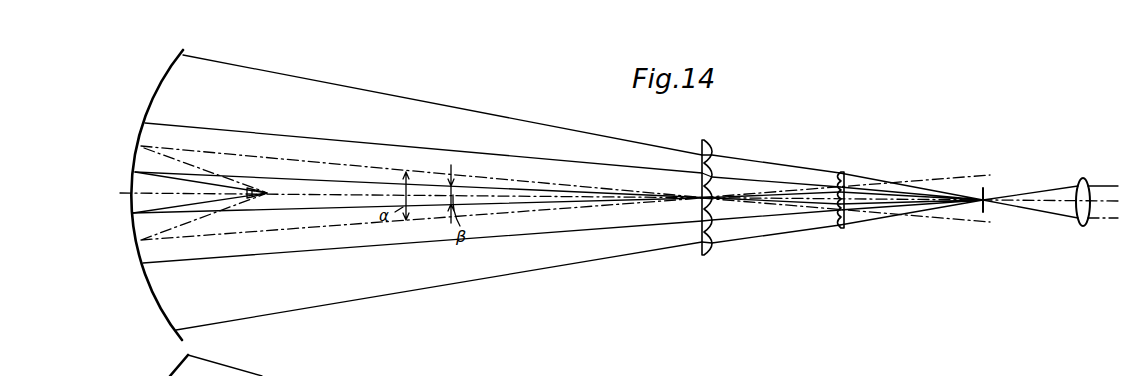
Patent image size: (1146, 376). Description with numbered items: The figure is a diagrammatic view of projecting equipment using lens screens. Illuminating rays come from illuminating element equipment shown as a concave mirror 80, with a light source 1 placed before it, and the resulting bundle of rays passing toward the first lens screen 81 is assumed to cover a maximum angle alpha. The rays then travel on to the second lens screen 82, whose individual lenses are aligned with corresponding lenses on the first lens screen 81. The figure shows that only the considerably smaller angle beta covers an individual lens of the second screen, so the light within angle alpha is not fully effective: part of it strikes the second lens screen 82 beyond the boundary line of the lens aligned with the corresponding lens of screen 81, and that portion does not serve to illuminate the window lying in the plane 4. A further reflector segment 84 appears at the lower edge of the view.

The concave mirror 80 is at (163, 78).
The light source 1 is at (268, 196).
The first lens screen 81 is at (706, 152).
The second lens screen 82 is at (846, 173).
The plane 4 is at (985, 207).
The reflector segment 84 is at (184, 365).